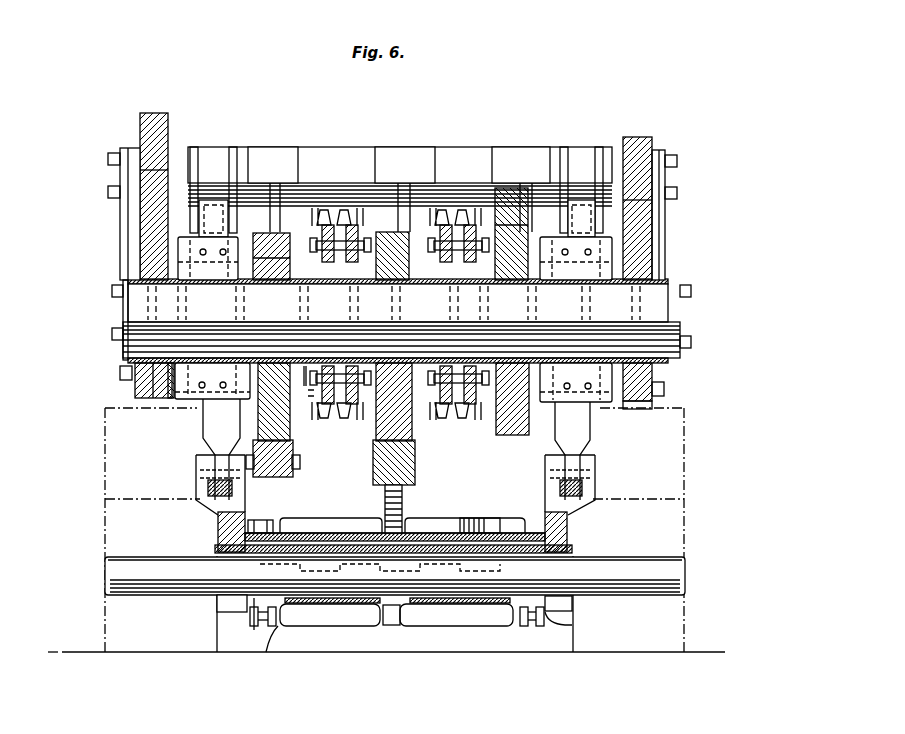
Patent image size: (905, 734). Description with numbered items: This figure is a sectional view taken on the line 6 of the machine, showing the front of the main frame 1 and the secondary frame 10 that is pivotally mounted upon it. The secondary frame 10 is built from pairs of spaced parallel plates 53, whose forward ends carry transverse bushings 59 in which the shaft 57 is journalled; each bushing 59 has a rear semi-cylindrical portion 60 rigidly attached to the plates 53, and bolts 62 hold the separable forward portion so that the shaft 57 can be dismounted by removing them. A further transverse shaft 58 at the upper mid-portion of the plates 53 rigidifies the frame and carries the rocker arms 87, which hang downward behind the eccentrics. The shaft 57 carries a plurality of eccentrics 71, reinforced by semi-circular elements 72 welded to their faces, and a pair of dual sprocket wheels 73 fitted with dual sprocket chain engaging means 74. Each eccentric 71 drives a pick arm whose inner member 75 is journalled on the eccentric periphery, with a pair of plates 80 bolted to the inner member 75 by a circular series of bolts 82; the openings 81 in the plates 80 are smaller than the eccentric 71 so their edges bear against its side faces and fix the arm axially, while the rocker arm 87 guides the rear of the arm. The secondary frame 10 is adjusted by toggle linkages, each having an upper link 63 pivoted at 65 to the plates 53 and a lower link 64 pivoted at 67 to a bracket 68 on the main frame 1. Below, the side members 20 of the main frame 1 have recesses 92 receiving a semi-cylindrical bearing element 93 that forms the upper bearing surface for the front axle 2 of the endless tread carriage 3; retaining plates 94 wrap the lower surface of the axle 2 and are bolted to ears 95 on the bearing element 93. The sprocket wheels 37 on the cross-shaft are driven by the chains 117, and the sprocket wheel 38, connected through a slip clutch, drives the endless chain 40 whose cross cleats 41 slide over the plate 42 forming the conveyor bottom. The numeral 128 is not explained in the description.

The main frame 1 is at (582, 550).
The front axle 2 is at (112, 578).
The endless tread carriage 3 is at (105, 528).
The section line 6— 6 is at (348, 512).
The secondary frame 10 is at (240, 148).
The side members 20 is at (218, 523).
The sprocket wheels 37 is at (270, 644).
The sprocket wheel 38 is at (390, 626).
The endless link-type chain 40 is at (404, 503).
The cross cleats 41 is at (470, 518).
The plate 42 is at (278, 532).
The plates 53 is at (233, 148).
The shaft 57 is at (648, 318).
The transverse shaft 58 is at (445, 165).
The bushings 59 is at (606, 256).
The rear semi-cylindrical portion 60 is at (222, 286).
The bolts 62 is at (200, 250).
The upper link 63 is at (222, 222).
The lower link 64 is at (205, 440).
The pivot 65 is at (208, 258).
The pivot 67 is at (200, 470).
The bracket 68 is at (208, 490).
The eccentrics 71 is at (142, 255).
The semi-circular elements 72 is at (112, 290).
The dual sprocket wheels 73 is at (332, 358).
The dual sprocket chain engaging means 74 is at (326, 262).
The inner member 75 is at (150, 122).
The plates 80 is at (140, 396).
The openings 81 is at (120, 195).
The bolts 82 is at (110, 159).
The rocker arms 87 is at (275, 150).
The recesses 92 is at (220, 612).
The bearing element 93 is at (215, 548).
The retaining plates 94 is at (352, 610).
The ears 95 is at (304, 610).
The sprocket chain 117 is at (260, 612).
The tensioner 128 is at (332, 210).